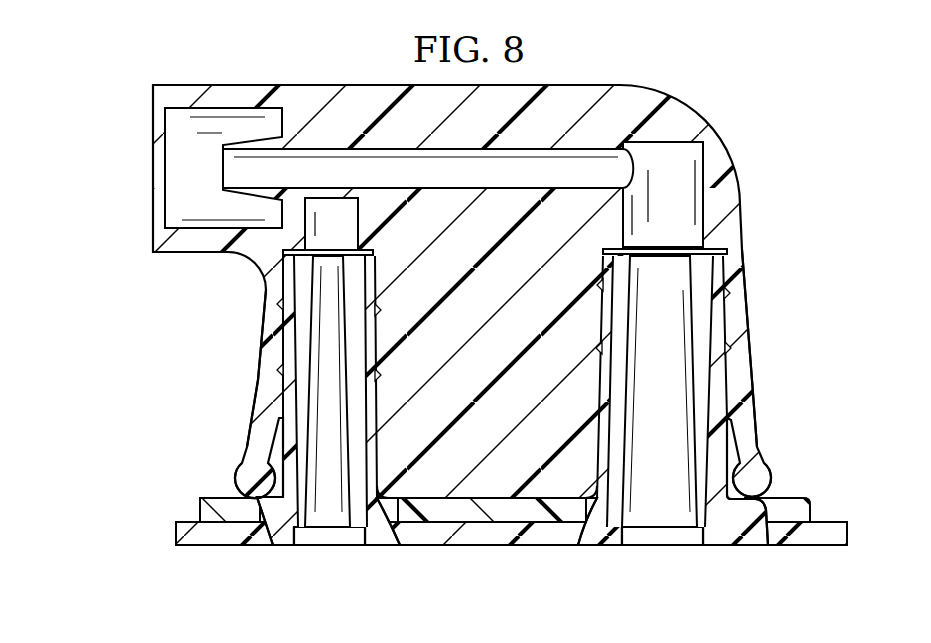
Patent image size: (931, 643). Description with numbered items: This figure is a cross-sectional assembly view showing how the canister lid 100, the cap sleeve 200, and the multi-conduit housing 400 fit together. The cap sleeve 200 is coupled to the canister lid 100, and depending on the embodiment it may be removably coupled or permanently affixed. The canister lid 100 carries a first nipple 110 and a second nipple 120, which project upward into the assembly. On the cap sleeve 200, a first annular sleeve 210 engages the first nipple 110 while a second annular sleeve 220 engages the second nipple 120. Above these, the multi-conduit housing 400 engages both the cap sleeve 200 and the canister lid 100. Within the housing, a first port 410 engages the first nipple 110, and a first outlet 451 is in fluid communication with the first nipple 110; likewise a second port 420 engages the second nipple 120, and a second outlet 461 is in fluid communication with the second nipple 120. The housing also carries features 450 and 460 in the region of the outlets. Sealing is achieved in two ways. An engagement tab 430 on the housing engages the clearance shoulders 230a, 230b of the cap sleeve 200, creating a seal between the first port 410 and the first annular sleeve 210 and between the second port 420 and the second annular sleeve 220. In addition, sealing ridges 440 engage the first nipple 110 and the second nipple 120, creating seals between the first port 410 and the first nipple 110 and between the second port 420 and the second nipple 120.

The canister lid 100 is at (527, 552).
The first nipple 110 is at (273, 396).
The second nipple 120 is at (753, 400).
The cap sleeve 200 is at (471, 532).
The first annular sleeve 210 is at (349, 530).
The second annular sleeve 220 is at (689, 530).
The clearance shoulder 230a is at (258, 431).
The clearance shoulder 230b is at (760, 431).
The multi-conduit housing 400 is at (320, 81).
The first port 410 is at (379, 404).
The second port 420 is at (594, 404).
The engagement tab 430 is at (270, 525).
The sealing ridges 440 is at (276, 304).
The recess 450 is at (178, 119).
The first outlet 451 is at (359, 216).
The rod 460 is at (559, 190).
The second outlet 461 is at (685, 146).